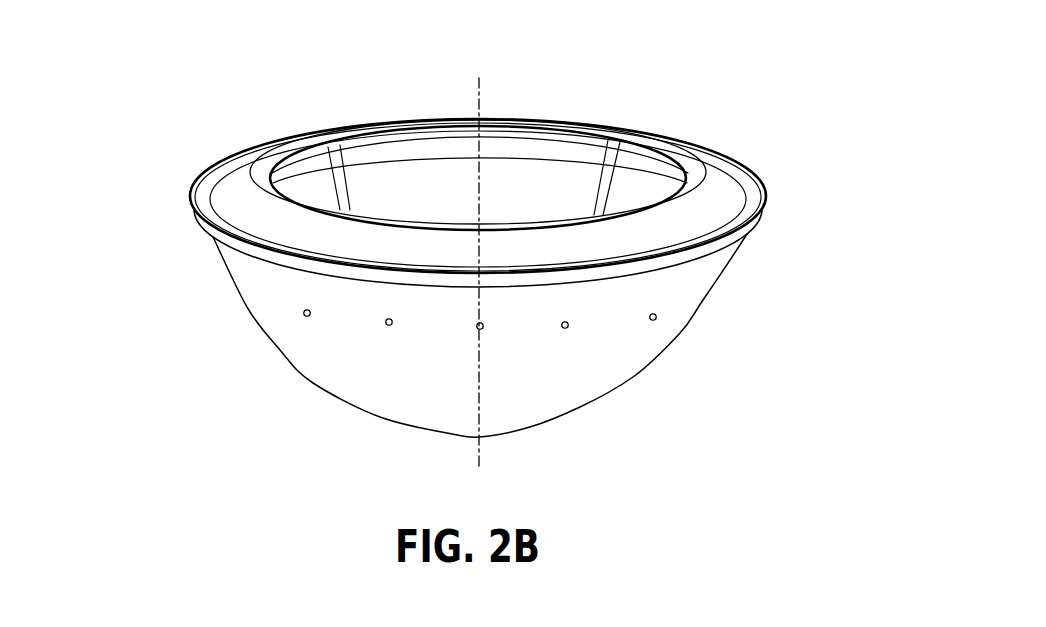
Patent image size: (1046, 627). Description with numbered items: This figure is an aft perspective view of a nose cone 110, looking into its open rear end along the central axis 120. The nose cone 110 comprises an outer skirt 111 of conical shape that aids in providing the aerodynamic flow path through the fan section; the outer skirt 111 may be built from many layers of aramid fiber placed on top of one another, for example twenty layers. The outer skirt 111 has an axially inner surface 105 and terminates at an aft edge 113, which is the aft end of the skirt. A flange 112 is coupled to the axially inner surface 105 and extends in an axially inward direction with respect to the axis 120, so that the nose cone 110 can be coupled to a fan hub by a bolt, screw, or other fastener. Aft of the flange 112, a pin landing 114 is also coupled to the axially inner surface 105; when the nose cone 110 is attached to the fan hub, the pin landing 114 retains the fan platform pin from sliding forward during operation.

The axially inner surface 105 is at (508, 187).
The nose cone 110 is at (755, 140).
The outer skirt 111 is at (600, 366).
The flange 112 is at (664, 216).
The aft edge 113 is at (213, 237).
The pin landing 114 is at (193, 202).
The axis 120 is at (480, 468).